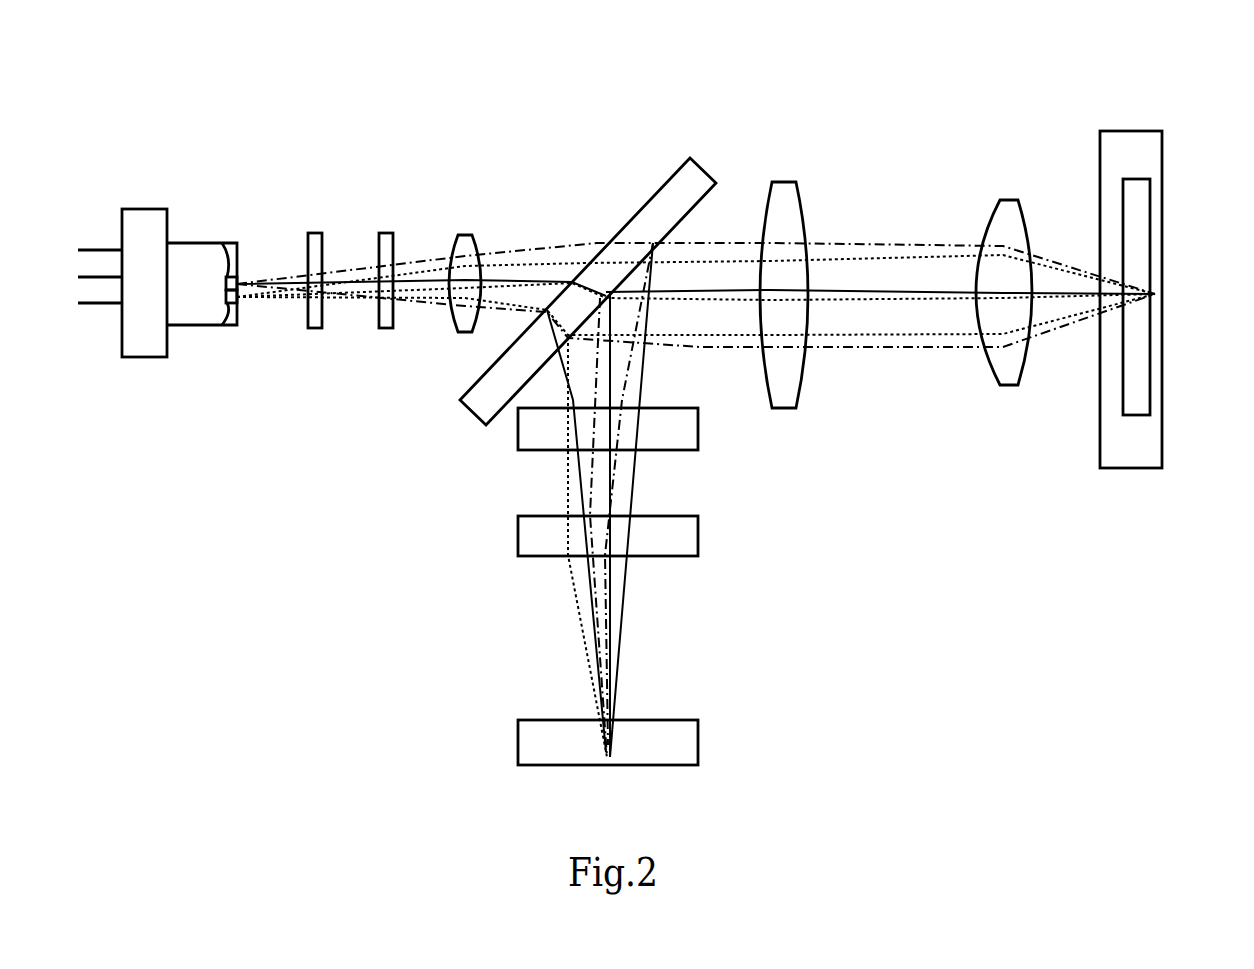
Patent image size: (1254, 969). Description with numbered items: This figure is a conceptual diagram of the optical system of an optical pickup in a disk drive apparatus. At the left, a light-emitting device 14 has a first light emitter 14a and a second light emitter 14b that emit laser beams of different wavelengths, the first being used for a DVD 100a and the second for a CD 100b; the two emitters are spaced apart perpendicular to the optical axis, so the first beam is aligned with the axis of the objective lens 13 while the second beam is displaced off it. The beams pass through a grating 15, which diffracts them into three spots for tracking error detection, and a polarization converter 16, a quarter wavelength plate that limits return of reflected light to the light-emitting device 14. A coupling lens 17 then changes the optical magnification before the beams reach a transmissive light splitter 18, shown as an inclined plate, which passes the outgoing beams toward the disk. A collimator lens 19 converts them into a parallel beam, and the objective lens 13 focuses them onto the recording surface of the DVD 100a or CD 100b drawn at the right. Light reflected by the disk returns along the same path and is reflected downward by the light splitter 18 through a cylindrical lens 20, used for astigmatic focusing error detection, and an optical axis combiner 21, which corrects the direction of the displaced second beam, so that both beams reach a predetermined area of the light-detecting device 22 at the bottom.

The objective lens 13 is at (1007, 208).
The light-emitting device 14 is at (197, 250).
The first light emitter 14a is at (230, 247).
The second light emitter 14b is at (225, 326).
The grating 15 is at (318, 237).
The polarization converter 16 is at (387, 237).
The coupling lens 17 is at (463, 247).
The light splitter 18 is at (697, 175).
The collimator lens 19 is at (780, 193).
The cylindrical lens 20 is at (687, 431).
The optical axis combiner 21 is at (687, 538).
The light-detecting device 22 is at (687, 742).
The DVD 100a is at (1136, 179).
The CD 100b is at (1115, 130).